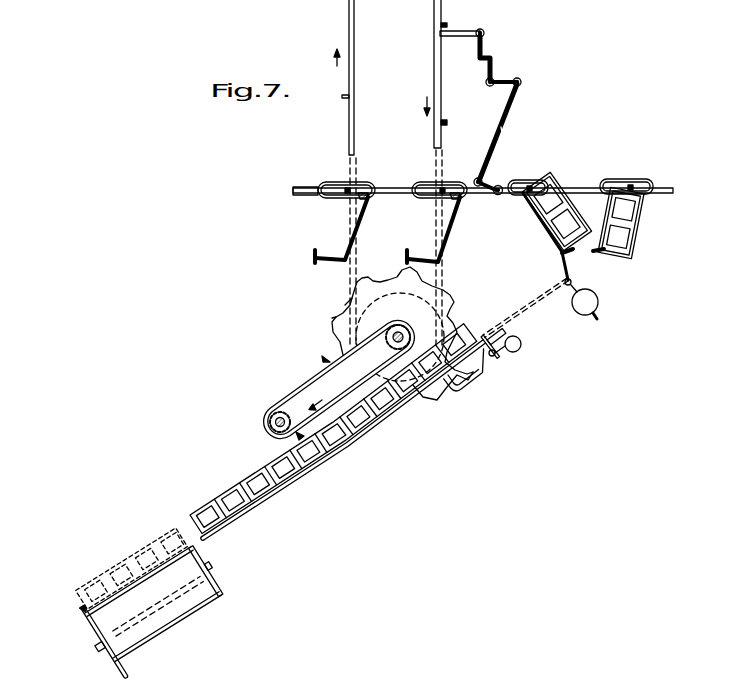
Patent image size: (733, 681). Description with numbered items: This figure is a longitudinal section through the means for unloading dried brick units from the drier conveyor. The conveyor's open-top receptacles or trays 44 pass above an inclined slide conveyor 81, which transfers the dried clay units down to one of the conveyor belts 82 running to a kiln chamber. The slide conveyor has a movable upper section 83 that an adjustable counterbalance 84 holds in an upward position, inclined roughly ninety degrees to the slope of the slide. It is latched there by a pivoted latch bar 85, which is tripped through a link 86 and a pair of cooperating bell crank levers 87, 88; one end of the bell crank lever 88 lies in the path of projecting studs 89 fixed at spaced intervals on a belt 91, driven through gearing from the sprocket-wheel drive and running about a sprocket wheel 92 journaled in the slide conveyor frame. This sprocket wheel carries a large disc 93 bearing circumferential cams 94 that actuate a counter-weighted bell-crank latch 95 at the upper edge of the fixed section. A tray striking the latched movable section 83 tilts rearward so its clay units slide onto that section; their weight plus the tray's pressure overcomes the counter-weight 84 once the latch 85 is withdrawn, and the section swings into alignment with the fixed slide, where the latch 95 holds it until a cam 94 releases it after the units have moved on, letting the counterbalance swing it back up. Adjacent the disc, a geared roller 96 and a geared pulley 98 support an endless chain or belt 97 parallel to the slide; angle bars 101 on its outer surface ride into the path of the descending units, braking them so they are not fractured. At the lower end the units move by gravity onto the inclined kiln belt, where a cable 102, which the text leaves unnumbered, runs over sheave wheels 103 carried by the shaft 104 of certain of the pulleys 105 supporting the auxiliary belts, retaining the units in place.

The receptacles or pallets 44 is at (640, 220).
The slide conveyor 81 is at (310, 468).
The conveyor belts 82 is at (124, 591).
The movable upper section 83 is at (555, 242).
The adjustable counterbalance 84 is at (599, 300).
The pivoted latch bar 85 is at (501, 185).
The link 86 is at (512, 97).
The bell crank lever 87 is at (493, 62).
The bell crank lever 88 is at (474, 30).
The projecting studs 89 is at (447, 25).
The belt 91 is at (433, 62).
The sprocket wheel 92 is at (388, 293).
The disc 93 is at (345, 305).
The circumferential cams 94 is at (332, 318).
The counter-weighted bell-crank latch 95 is at (473, 367).
The geared roller 96 is at (395, 332).
The endless chain or belt 97 is at (297, 388).
The geared pulley 98 is at (273, 417).
The angle bars 101 is at (300, 433).
The pointer 102 is at (80, 606).
The sheave wheels 103 is at (82, 611).
The shaft 104 is at (95, 648).
The pulleys 105 is at (160, 620).